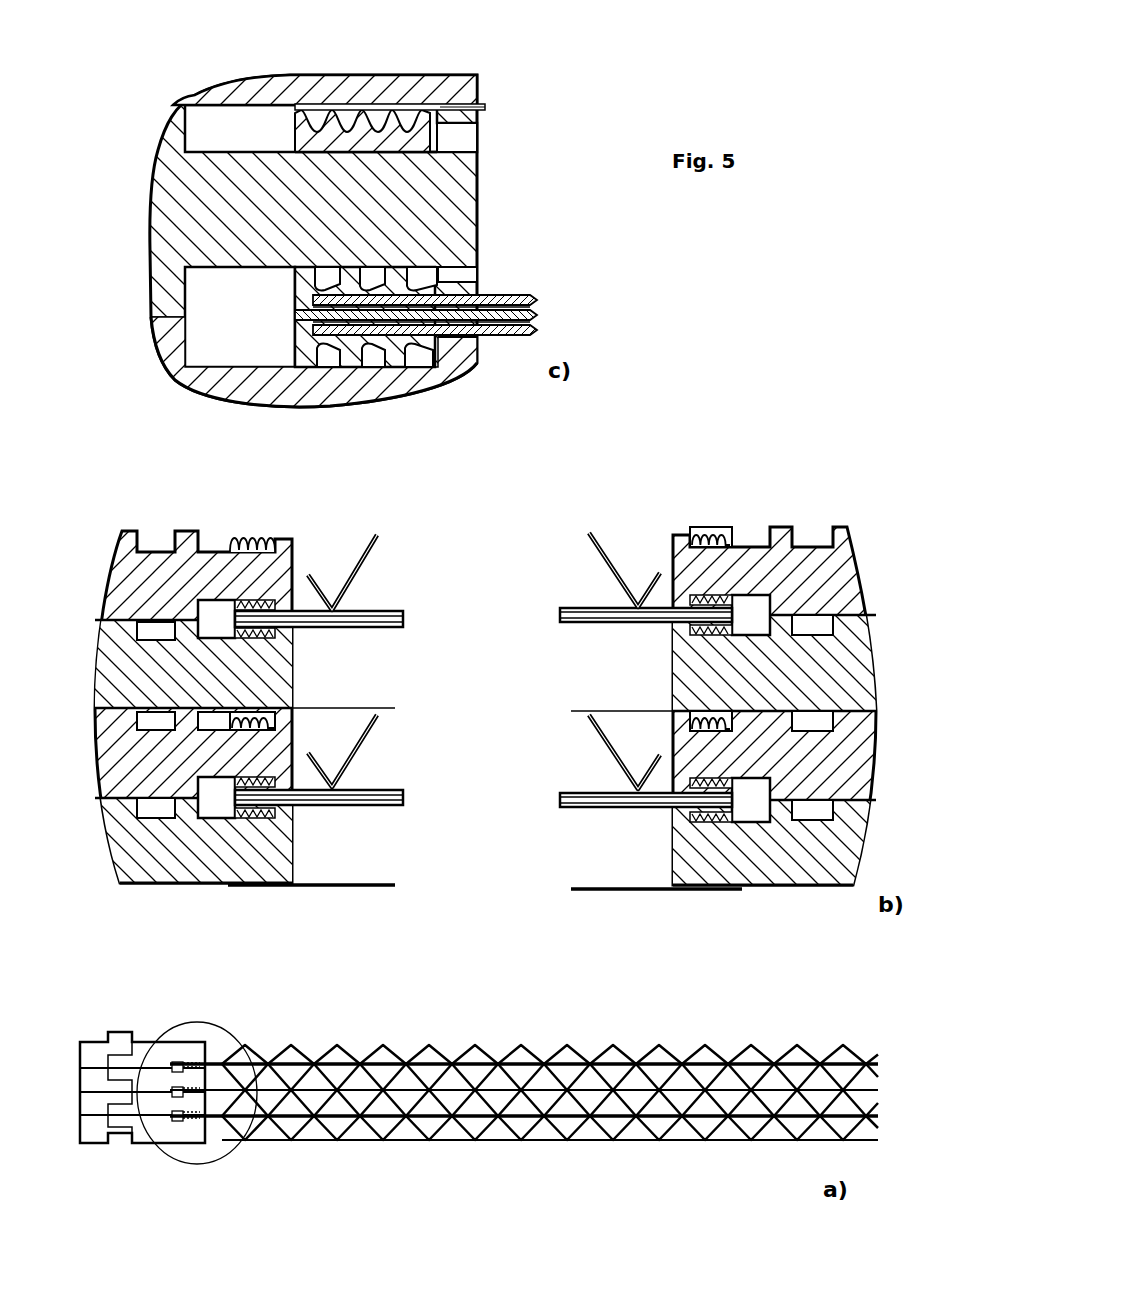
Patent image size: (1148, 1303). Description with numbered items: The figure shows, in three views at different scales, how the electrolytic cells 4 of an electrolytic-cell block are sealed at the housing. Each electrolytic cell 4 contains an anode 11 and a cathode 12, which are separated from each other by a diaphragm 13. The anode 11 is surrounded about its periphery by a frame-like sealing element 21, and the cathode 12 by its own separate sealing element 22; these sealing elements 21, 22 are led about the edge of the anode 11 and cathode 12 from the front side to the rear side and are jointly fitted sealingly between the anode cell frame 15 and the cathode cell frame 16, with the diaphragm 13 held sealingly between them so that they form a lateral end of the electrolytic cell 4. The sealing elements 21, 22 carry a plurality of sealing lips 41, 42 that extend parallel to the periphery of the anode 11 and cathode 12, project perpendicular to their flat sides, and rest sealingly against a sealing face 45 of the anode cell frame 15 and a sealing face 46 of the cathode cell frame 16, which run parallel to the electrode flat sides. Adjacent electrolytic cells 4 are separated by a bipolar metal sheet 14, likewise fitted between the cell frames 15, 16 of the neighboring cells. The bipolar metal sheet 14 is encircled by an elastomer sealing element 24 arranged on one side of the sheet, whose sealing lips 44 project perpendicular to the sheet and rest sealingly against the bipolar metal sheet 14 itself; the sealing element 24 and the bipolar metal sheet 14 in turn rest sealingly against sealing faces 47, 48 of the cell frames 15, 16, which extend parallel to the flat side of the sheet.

The electrolytic cell 4 is at (418, 1075).
The anode 11 is at (527, 331).
The cathode 12 is at (505, 295).
The diaphragm 13 is at (530, 313).
The bipolar metal sheet 14 is at (485, 108).
The anode cell frame 15 is at (427, 88).
The cathode cell frame 16 is at (463, 176).
The sealing element 21 is at (393, 350).
The sealing element 22 is at (425, 272).
The sealing element 24 is at (437, 138).
The sealing lip 41 is at (380, 343).
The sealing lip 42 is at (353, 268).
The sealing lip 44 is at (333, 125).
The sealing face 45 is at (420, 368).
The sealing face 46 is at (395, 268).
The sealing face 47 is at (437, 108).
The sealing face 48 is at (413, 153).